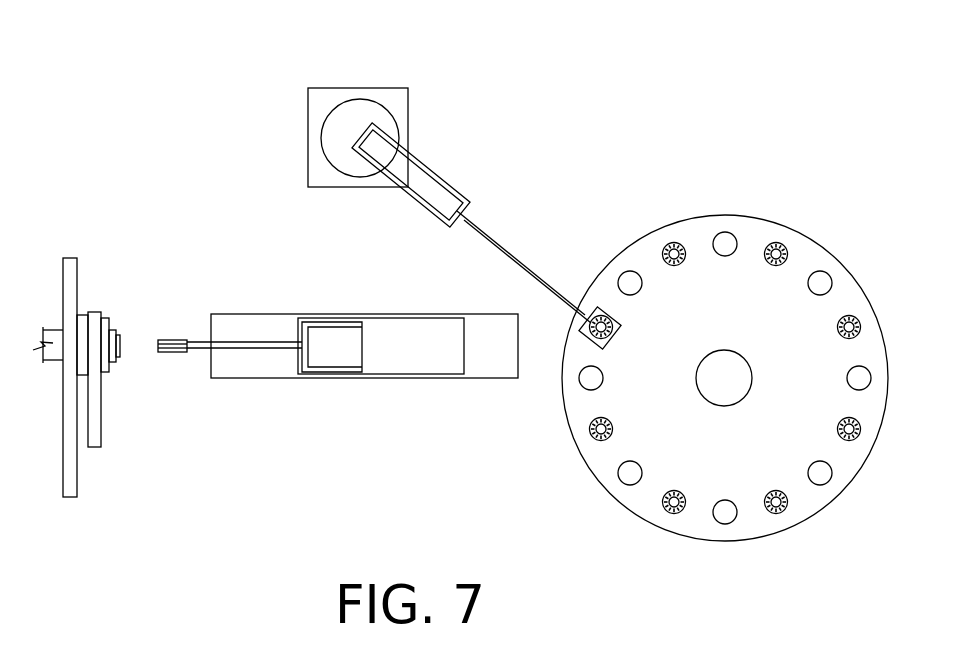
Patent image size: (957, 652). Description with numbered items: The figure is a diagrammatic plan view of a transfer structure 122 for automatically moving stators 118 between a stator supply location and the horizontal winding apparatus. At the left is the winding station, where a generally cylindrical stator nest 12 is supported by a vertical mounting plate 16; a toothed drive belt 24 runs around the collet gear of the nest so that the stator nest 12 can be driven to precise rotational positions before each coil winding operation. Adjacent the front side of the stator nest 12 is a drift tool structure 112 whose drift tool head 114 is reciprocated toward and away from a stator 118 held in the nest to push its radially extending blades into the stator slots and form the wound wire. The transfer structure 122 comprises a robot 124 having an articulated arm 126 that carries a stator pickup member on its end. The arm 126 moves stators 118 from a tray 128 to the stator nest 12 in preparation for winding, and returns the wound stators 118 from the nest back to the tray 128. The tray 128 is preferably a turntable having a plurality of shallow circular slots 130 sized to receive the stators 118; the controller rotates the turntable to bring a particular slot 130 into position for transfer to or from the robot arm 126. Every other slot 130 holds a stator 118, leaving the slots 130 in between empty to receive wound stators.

The stator nest 12 is at (128, 395).
The vertical mounting plate 16 is at (77, 268).
The toothed drive belt 24 is at (101, 442).
The drift tool structure 112 is at (321, 295).
The drift tool head 114 is at (170, 353).
The stator 118 is at (838, 433).
The transfer structure 122 is at (512, 122).
The robot 124 is at (338, 58).
The articulated arm 126 is at (481, 226).
The tray 128 is at (731, 215).
The circular slots 130 is at (713, 505).